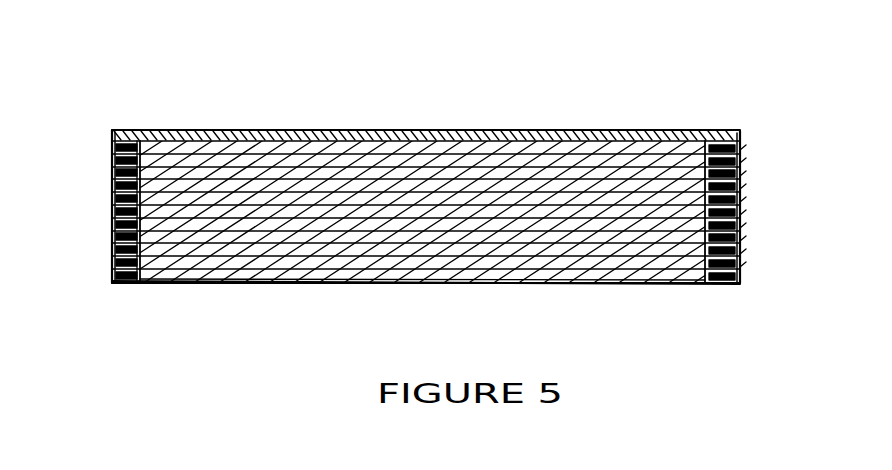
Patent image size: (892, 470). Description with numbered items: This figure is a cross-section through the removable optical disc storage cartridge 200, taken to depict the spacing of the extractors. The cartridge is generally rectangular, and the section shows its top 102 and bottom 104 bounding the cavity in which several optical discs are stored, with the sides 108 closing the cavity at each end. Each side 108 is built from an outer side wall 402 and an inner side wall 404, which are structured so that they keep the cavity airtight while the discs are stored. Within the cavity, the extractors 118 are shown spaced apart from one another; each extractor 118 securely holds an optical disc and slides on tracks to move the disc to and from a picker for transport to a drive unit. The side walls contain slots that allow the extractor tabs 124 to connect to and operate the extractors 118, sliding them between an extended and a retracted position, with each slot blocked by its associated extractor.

The removable optical disc storage cartridge 200 is at (243, 95).
The top 102 is at (353, 128).
The bottom 104 is at (560, 283).
The side 108 is at (83, 205).
The extractor 118 is at (513, 160).
The extractor tab 124 is at (115, 253).
The outer side wall 402 is at (112, 150).
The inner side wall 404 is at (150, 258).